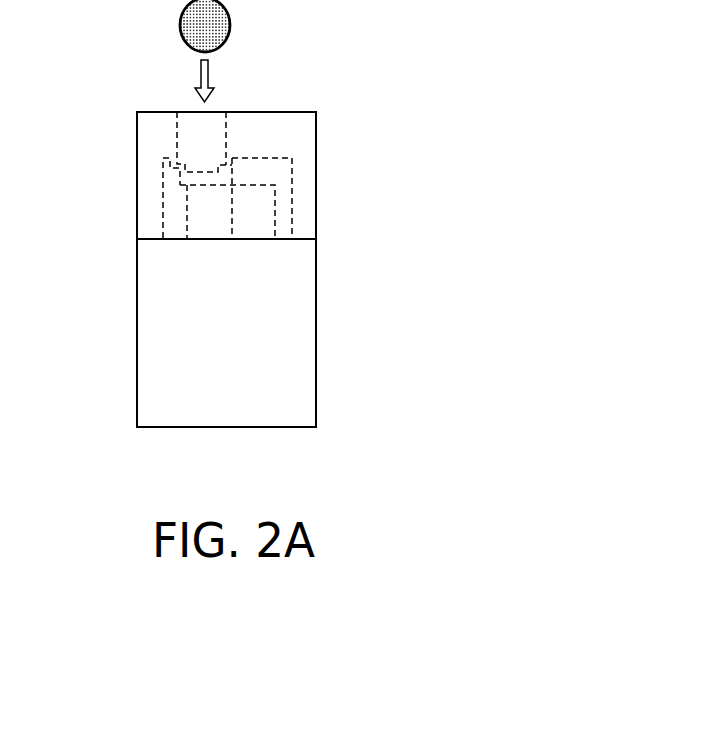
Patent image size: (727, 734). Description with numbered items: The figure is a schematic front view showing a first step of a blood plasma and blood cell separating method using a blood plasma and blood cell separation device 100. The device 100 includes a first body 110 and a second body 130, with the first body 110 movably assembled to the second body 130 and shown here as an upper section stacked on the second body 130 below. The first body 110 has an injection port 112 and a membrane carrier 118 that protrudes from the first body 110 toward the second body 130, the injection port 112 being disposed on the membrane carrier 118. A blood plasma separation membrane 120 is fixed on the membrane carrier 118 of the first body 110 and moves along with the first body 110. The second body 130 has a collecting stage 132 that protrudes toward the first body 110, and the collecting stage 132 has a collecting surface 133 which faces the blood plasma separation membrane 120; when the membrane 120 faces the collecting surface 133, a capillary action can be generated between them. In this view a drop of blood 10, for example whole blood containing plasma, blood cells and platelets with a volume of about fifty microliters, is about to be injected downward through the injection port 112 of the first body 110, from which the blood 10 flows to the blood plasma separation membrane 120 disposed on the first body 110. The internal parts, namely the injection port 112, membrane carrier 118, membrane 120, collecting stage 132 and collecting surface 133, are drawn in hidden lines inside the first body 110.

The blood 10 is at (218, 23).
The blood plasma and blood cell separation device 100 is at (305, 450).
The first body 110 is at (316, 223).
The injection port 112 is at (190, 165).
The membrane carrier 118 is at (247, 157).
The blood plasma separation membrane 120 is at (187, 185).
The second body 130 is at (316, 345).
The collecting stage 132 is at (187, 218).
The collecting surface 133 is at (263, 187).